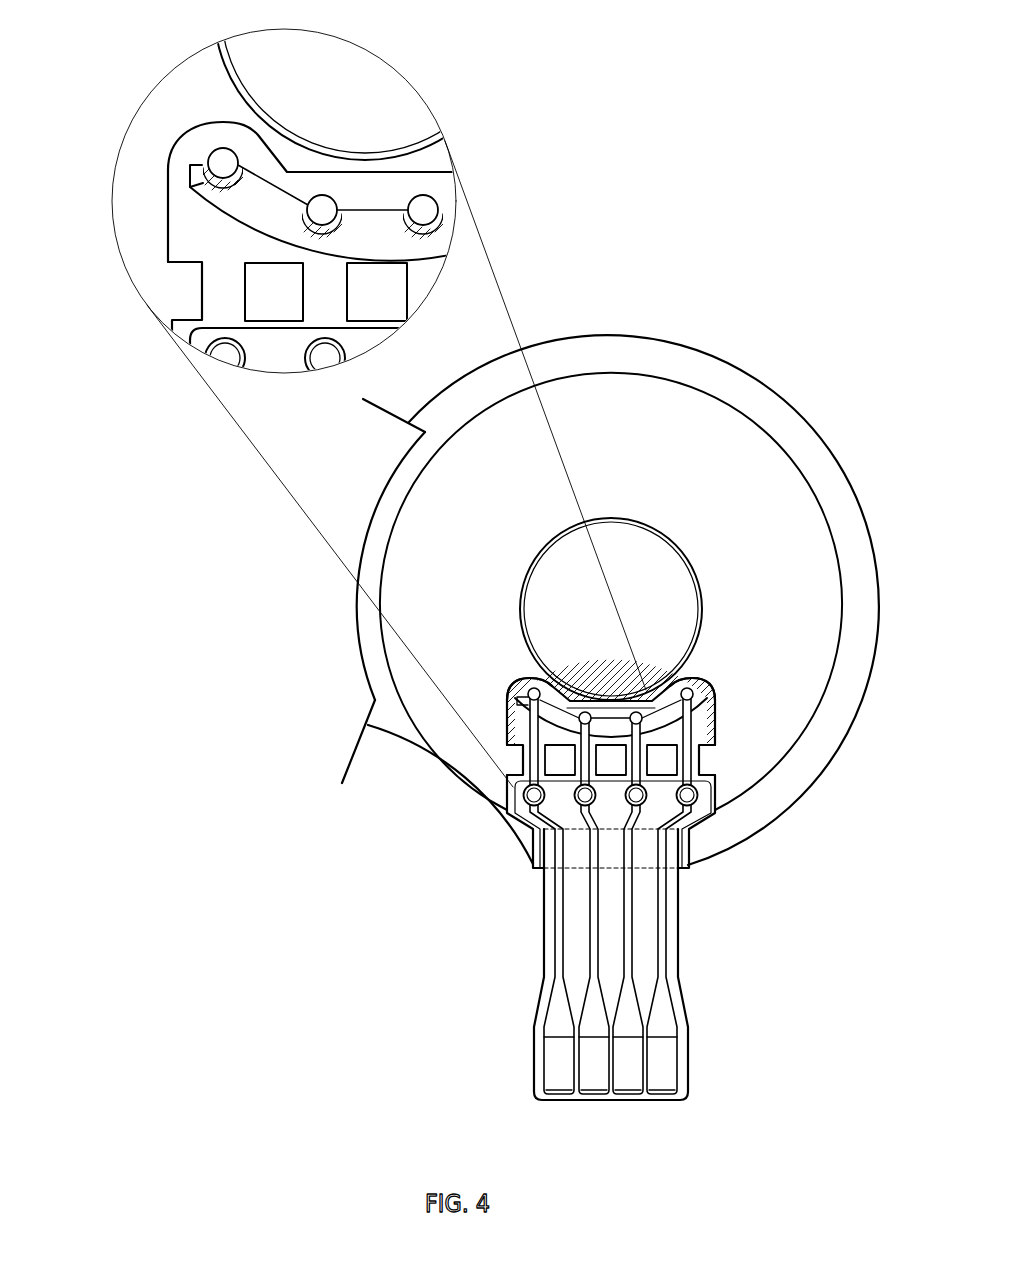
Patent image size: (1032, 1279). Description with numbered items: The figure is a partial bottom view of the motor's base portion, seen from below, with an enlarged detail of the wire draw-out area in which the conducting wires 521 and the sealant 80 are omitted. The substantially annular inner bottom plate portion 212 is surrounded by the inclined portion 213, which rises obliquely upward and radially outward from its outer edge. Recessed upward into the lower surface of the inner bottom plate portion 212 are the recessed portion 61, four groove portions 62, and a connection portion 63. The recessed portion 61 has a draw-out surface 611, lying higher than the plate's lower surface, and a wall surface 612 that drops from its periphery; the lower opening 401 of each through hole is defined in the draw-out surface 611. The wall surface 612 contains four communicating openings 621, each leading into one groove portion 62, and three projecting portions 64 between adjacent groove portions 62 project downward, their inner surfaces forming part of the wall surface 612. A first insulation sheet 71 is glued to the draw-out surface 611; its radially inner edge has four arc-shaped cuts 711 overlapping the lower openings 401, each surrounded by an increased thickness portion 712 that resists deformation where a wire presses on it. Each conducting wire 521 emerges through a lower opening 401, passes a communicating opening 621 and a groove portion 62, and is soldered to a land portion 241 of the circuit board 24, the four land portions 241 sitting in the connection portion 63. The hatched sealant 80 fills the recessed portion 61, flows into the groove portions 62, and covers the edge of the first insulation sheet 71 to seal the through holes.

The circuit board 24 is at (610, 959).
The land portion 241 is at (509, 822).
The connection portion 63 is at (716, 800).
The groove portion 62 is at (601, 804).
The communicating opening 621 is at (515, 683).
The recessed portion 61 is at (713, 727).
The draw-out surface 611 is at (180, 207).
The wall surface 612 is at (182, 234).
The first insulation sheet 71 is at (716, 703).
The cut 711 is at (223, 162).
The increased thickness portion 712 is at (193, 180).
The lower opening 401 is at (690, 687).
The sealant 80 is at (716, 688).
The projecting portion 64 is at (522, 790).
The conducting wire 521 is at (546, 752).
The inner bottom plate portion 212 is at (663, 417).
The inclined portion 213 is at (750, 400).